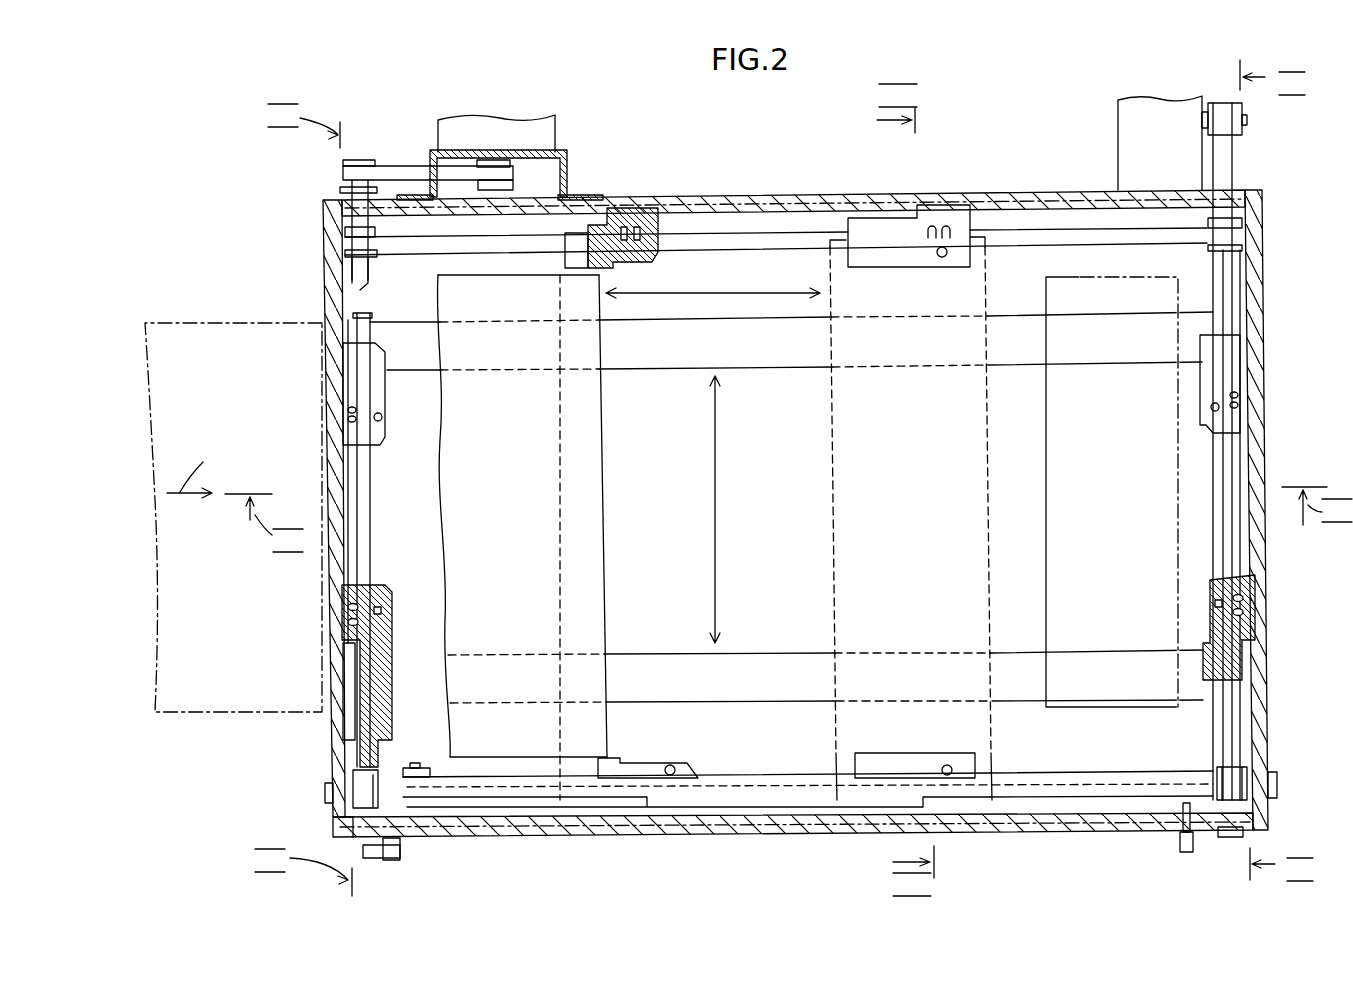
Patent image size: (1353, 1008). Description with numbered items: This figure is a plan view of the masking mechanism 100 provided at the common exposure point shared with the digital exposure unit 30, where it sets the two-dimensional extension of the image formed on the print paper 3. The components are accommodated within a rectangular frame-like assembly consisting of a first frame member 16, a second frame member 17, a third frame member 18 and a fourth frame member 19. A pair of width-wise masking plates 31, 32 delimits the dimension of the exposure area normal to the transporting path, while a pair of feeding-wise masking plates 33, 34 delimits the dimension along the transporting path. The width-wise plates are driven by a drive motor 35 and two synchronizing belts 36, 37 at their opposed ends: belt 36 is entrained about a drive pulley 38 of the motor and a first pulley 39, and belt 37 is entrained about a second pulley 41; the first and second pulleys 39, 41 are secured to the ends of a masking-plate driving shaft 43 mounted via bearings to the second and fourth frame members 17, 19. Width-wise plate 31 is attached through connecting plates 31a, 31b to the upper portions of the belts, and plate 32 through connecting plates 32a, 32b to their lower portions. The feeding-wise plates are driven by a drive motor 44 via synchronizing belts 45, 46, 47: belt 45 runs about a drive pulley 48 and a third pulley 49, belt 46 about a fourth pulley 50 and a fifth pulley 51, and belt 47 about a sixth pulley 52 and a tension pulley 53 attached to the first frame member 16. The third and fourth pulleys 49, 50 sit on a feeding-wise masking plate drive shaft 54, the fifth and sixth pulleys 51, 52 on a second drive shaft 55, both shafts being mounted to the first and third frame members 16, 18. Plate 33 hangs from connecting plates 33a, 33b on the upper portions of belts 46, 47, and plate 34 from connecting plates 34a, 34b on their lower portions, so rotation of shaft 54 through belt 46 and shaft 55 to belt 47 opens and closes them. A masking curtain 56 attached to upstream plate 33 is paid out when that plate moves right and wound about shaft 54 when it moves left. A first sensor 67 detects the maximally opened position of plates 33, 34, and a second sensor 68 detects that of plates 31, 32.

The masking mechanism 100 is at (235, 202).
The print paper 3 is at (170, 322).
The first frame member 16 is at (997, 833).
The second frame member 17 is at (1265, 550).
The third frame member 18 is at (916, 197).
The fourth frame member 19 is at (335, 428).
The digital exposure unit 30 is at (1042, 462).
The width-wise masking plate 31 is at (778, 652).
The connecting plate 31a is at (1255, 618).
The connecting plate 31b is at (385, 585).
The width-wise masking plate 32 is at (787, 368).
The connecting plate 32a is at (1242, 420).
The connecting plate 32b is at (387, 409).
The feeding-wise masking plate 33 is at (553, 578).
The connecting plate 33a is at (655, 760).
The connecting plate 33b is at (660, 223).
The feeding-wise masking plate 34 is at (848, 540).
The connecting plate 34a is at (975, 757).
The connecting plate 34b is at (978, 212).
The drive motor 35 is at (1118, 130).
The synchronizing belt 36 is at (1225, 164).
The synchronizing belt 37 is at (371, 482).
The drive pulley 38 is at (1243, 122).
The first pulley 39 is at (1250, 797).
The second pulley 41 is at (355, 775).
The masking-plate driving shaft 43 is at (1082, 776).
The drive motor 44 is at (545, 130).
The synchronizing belt 45 is at (410, 178).
The synchronizing belt 46 is at (778, 232).
The synchronizing belt 47 is at (785, 776).
The drive pulley 48 is at (510, 188).
The third pulley 49 is at (343, 168).
The fourth pulley 50 is at (350, 234).
The fifth pulley 51 is at (1245, 222).
The sixth pulley 52 is at (1216, 770).
The tension pulley 53 is at (420, 768).
The feeding-wise masking plate drive shaft 54 is at (350, 277).
The feeding-wise masking plate drive shaft 55 is at (1240, 266).
The masking curtain 56 is at (590, 492).
The first sensor 67 is at (1178, 848).
The second sensor 68 is at (363, 850).